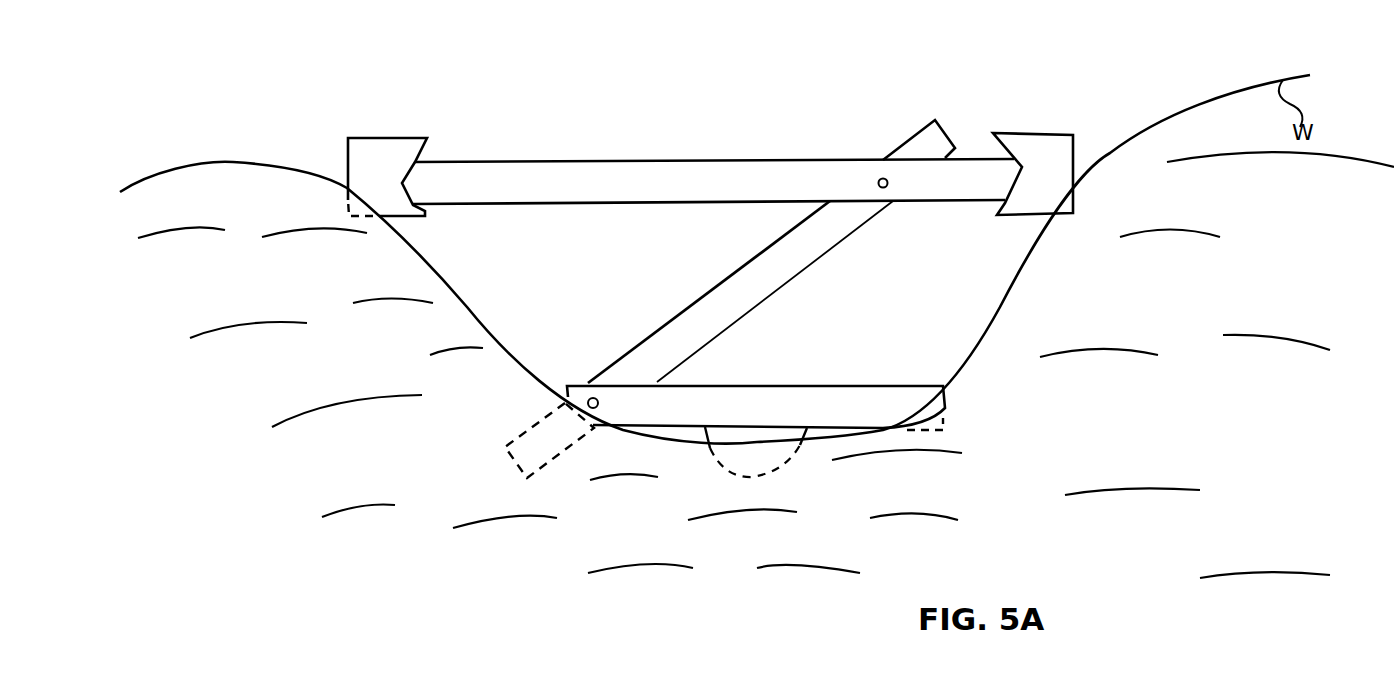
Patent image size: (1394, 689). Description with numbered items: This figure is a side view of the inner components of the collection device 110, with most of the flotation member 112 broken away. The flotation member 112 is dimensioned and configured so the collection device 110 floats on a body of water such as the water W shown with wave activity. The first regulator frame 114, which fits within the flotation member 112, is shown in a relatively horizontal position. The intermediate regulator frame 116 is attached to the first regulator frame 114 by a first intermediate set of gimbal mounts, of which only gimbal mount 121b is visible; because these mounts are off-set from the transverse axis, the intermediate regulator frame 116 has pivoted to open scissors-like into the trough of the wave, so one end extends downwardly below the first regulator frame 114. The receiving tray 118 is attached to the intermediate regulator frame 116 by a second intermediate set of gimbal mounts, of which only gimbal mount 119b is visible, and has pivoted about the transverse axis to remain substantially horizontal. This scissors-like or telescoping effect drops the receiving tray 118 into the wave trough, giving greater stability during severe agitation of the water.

The collection device 110 is at (706, 52).
The flotation member 112 is at (1042, 150).
The first regulator frame 114 is at (547, 187).
The intermediate regulator frame 116 is at (792, 253).
The receiving tray 118 is at (827, 398).
The second intermediate gimbal mount 119b is at (593, 397).
The first intermediate gimbal mount 121b is at (883, 178).